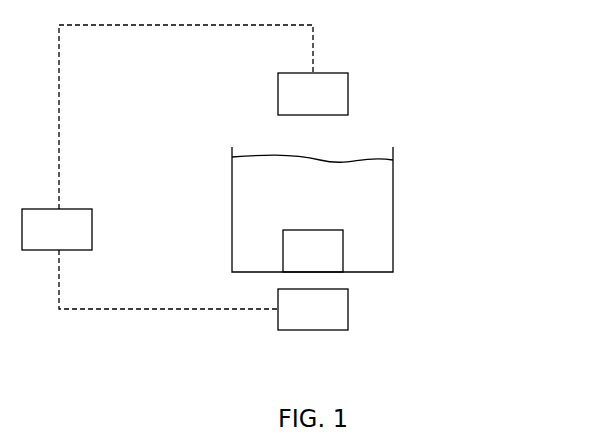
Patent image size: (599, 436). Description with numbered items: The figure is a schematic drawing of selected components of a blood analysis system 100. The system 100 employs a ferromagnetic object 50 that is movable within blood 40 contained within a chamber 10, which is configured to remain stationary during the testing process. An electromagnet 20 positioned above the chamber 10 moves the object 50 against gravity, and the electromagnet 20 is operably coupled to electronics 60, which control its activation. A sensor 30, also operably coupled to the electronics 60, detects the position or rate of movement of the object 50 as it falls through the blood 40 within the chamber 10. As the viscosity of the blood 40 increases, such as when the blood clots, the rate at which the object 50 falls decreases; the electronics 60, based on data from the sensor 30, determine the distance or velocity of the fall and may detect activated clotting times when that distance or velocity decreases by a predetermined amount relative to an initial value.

The blood analysis system 100 is at (461, 95).
The chamber 10 is at (395, 177).
The electromagnet 20 is at (301, 105).
The sensor 30 is at (301, 321).
The blood 40 is at (284, 174).
The ferromagnetic object 50 is at (301, 264).
The electronics 60 is at (45, 241).